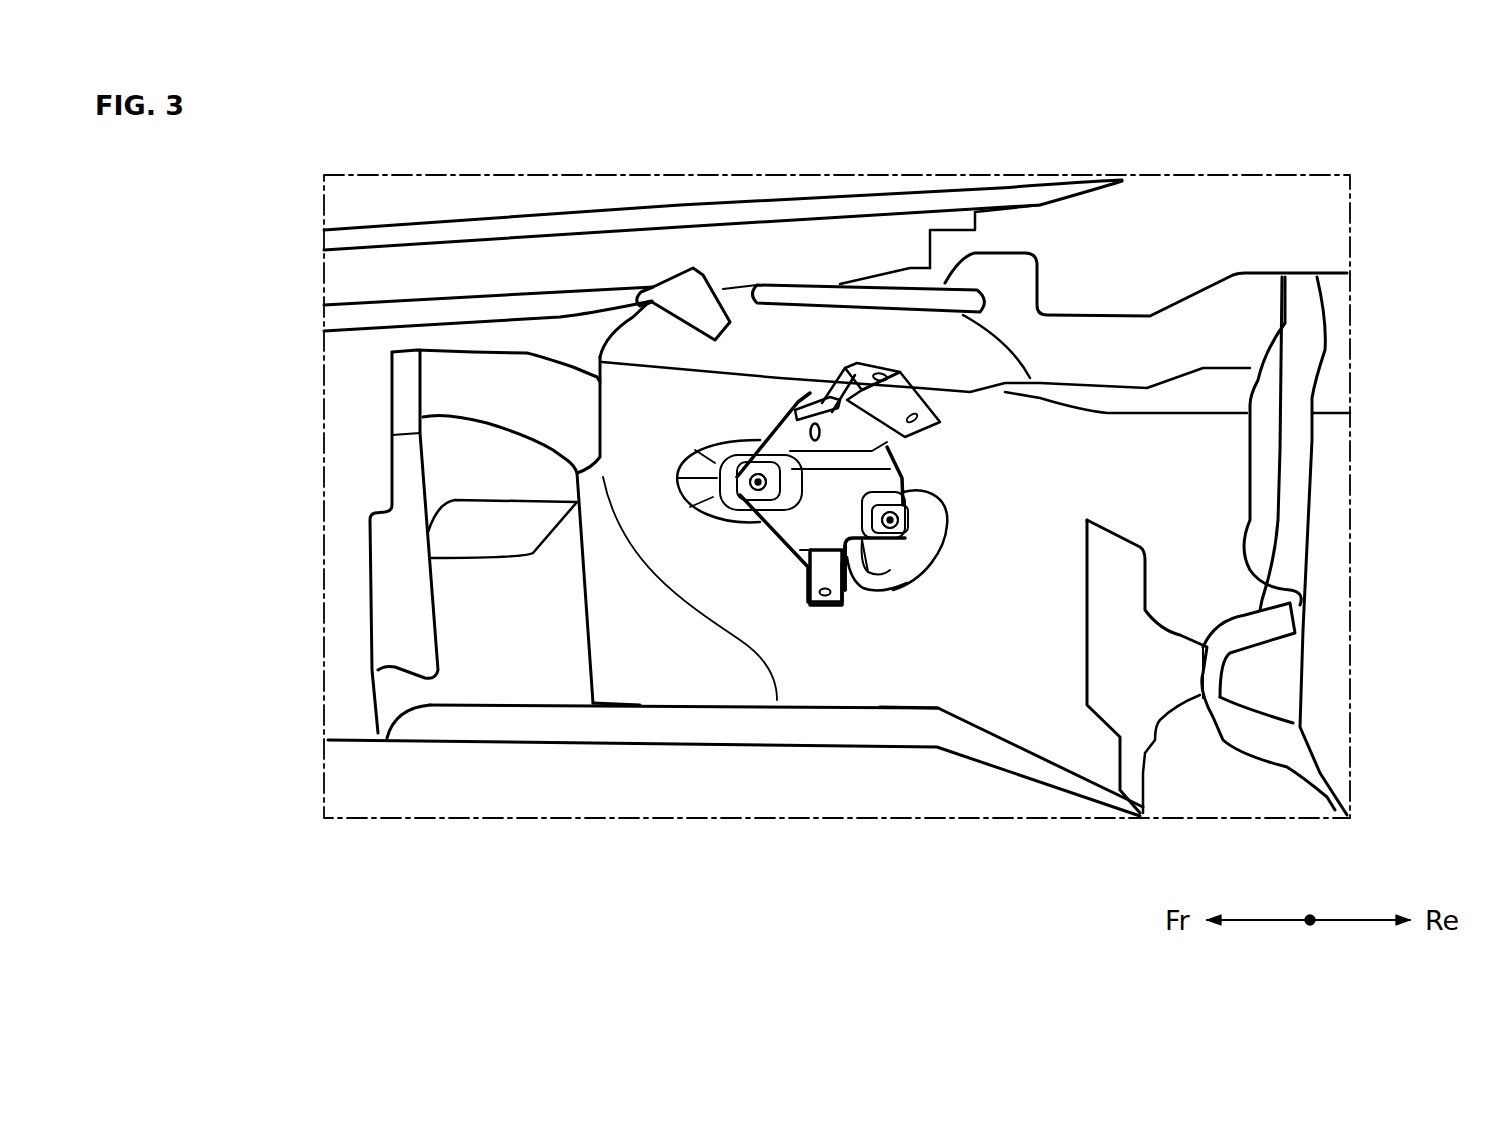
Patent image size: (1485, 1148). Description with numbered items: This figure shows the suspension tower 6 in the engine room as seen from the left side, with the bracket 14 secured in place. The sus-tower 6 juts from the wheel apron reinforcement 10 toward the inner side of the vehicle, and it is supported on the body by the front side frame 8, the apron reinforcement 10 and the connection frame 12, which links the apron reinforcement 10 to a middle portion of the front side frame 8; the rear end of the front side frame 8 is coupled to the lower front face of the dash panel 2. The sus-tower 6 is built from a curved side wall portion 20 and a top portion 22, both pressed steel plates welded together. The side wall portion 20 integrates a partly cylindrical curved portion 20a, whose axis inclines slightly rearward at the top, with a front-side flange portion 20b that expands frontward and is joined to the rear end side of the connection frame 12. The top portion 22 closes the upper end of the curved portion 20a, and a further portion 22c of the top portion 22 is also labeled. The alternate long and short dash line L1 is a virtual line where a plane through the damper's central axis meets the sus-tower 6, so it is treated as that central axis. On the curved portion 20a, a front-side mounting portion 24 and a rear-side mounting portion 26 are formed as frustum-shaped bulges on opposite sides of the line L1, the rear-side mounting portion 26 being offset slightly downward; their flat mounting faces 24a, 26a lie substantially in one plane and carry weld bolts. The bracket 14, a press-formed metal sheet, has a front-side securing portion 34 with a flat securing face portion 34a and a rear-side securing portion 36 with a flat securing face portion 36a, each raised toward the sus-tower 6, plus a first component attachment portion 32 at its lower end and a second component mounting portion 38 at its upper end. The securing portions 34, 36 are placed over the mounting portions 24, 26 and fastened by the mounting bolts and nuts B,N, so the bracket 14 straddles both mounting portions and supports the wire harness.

The dash panel 2 is at (1297, 590).
The suspension tower 6 is at (748, 123).
The front side frame 8 is at (487, 790).
The wheel apron reinforcement 10 is at (481, 335).
The connection frame 12 is at (457, 573).
The bracket 14 is at (905, 467).
The side wall portion 20 is at (660, 410).
The curved portion 20a is at (893, 677).
The front-side flange portion 20b is at (648, 655).
The top portion 22 is at (747, 317).
The side sill outer flange 22c is at (1192, 507).
The front-side mounting portion 24 is at (715, 512).
The mounting face 24a is at (733, 497).
The rear-side mounting portion 26 is at (928, 562).
The mounting face 26a is at (900, 560).
The first component attachment portion 32 is at (843, 603).
The front-side securing portion 34 is at (707, 481).
The securing face portion 34a is at (717, 478).
The rear-side securing portion 36 is at (941, 514).
The securing face portion 36a is at (920, 493).
The second component mounting portion 38 is at (890, 405).
The mounting bolt and nut B,N is at (755, 478).
The virtual line L1 is at (855, 150).